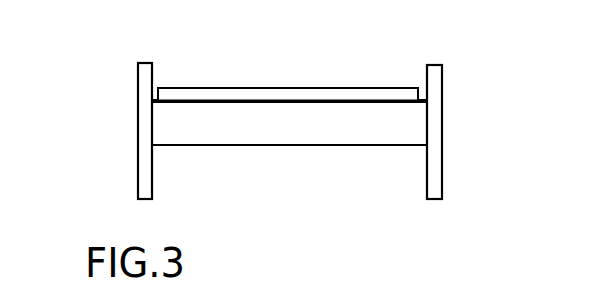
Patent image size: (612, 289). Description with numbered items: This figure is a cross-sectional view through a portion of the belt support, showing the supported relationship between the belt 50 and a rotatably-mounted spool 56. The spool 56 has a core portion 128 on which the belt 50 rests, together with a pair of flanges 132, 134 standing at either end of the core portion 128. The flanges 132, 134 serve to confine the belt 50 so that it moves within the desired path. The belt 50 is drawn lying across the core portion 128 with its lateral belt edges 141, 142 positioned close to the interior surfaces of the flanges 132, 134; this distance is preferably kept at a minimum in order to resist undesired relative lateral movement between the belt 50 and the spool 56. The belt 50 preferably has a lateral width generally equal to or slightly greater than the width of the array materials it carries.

The belt 50 is at (316, 79).
The spool 56 is at (453, 133).
The core portion 128 is at (323, 134).
The flange 132 is at (442, 160).
The flange 134 is at (138, 172).
The belt edge 141 is at (157, 98).
The belt edge 142 is at (419, 98).